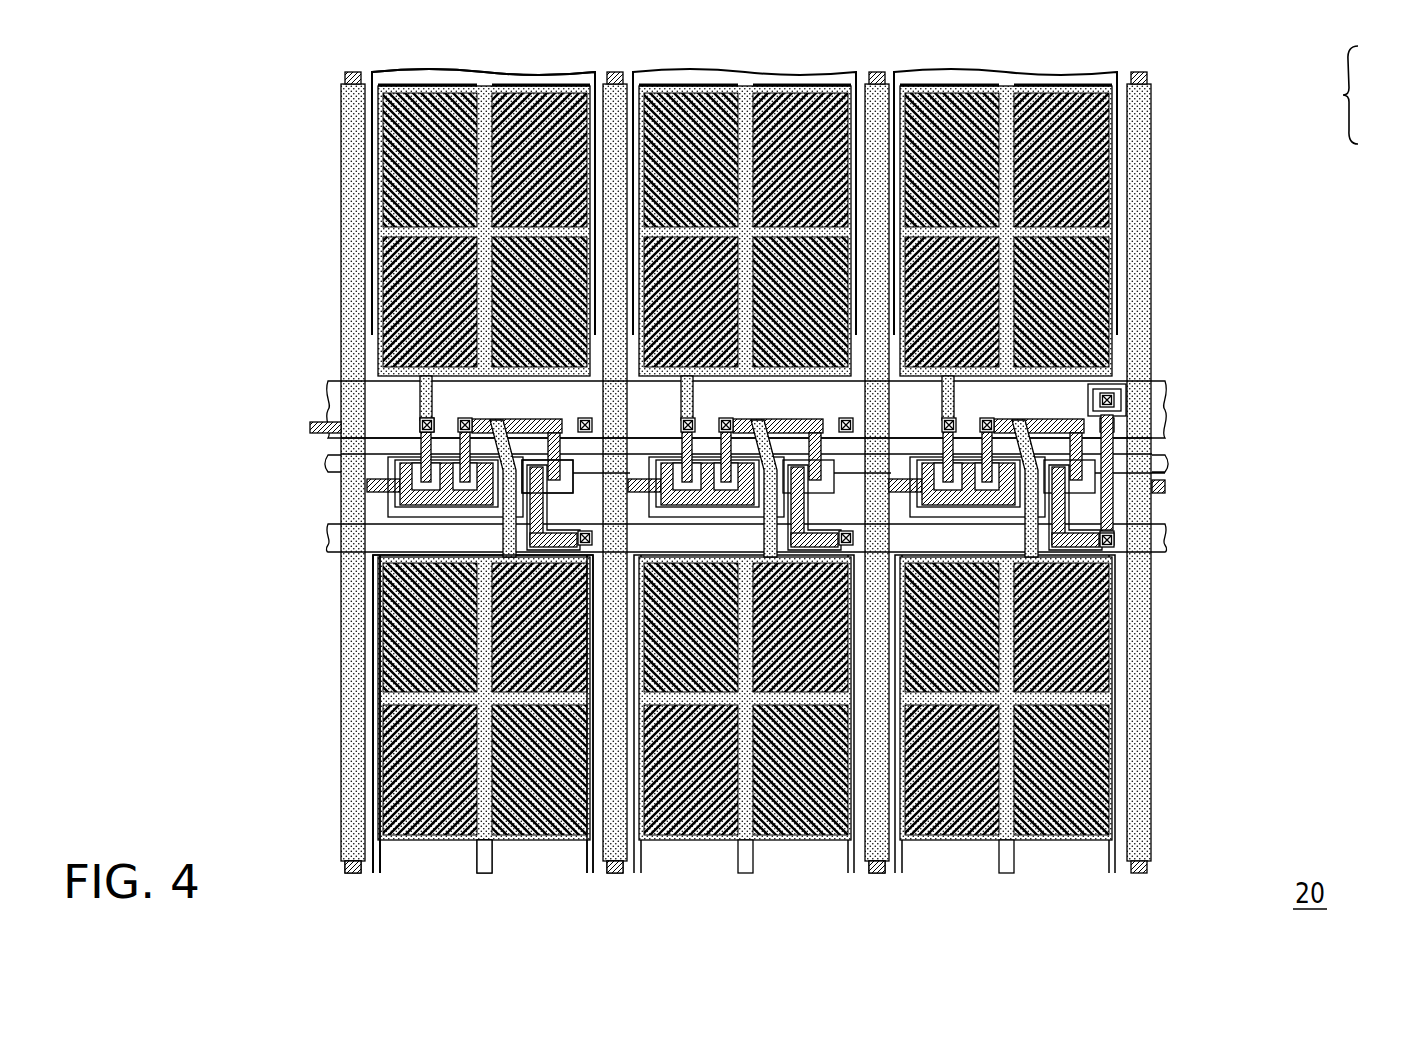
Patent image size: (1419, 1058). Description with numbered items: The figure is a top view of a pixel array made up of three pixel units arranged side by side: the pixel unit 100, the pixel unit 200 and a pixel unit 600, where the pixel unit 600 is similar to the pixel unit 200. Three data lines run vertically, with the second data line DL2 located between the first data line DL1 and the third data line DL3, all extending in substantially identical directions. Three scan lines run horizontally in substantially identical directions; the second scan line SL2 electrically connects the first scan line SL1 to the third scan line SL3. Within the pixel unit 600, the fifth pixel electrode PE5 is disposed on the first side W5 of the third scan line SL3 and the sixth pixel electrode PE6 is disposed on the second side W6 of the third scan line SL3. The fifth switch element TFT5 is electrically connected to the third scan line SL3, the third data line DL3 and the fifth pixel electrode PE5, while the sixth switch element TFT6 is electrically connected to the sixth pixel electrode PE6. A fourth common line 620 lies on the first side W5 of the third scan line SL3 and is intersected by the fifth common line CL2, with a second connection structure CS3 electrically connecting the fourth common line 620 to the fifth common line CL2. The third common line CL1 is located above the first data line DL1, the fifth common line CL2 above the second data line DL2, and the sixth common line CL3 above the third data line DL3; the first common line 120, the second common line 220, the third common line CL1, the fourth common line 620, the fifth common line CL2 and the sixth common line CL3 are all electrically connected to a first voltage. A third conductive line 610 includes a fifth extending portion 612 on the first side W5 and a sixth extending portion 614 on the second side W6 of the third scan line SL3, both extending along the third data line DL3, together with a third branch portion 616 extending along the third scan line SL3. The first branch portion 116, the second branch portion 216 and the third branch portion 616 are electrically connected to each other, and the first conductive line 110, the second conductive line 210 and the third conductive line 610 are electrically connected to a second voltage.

The fifth extending portion 612 is at (484, 85).
The sixth extending portion 614 is at (484, 873).
The third branch portion 616 is at (333, 555).
The third conductive line 610 is at (1330, 95).
The fifth pixel electrode PE5 is at (392, 140).
The sixth pixel electrode PE6 is at (407, 637).
The sixth common line CL3 is at (353, 155).
The fifth common line CL2 is at (630, 88).
The third common line CL1 is at (890, 88).
The third data line DL3 is at (353, 876).
The second data line DL2 is at (614, 876).
The first data line DL1 is at (876, 876).
The second conductive line 210 is at (745, 92).
The first conductive line 110 is at (1006, 92).
The second connection structure CS3 is at (507, 440).
The sixth switch element TFT6 is at (597, 417).
The fifth switch element TFT5 is at (427, 497).
The fourth common line 620 is at (327, 405).
The first side of the third scan line W5 is at (333, 452).
The second side of the third scan line W6 is at (333, 478).
The third scan line SL3 is at (327, 463).
The second scan line SL2 is at (327, 543).
The first scan line SL1 is at (1165, 465).
The second common line 220 is at (852, 397).
The first common line 120 is at (1160, 424).
The first branch portion 116 is at (1047, 540).
The second branch portion 216 is at (775, 578).
The pixel unit 600 is at (540, 860).
The pixel unit 200 is at (800, 860).
The pixel unit 100 is at (1062, 860).